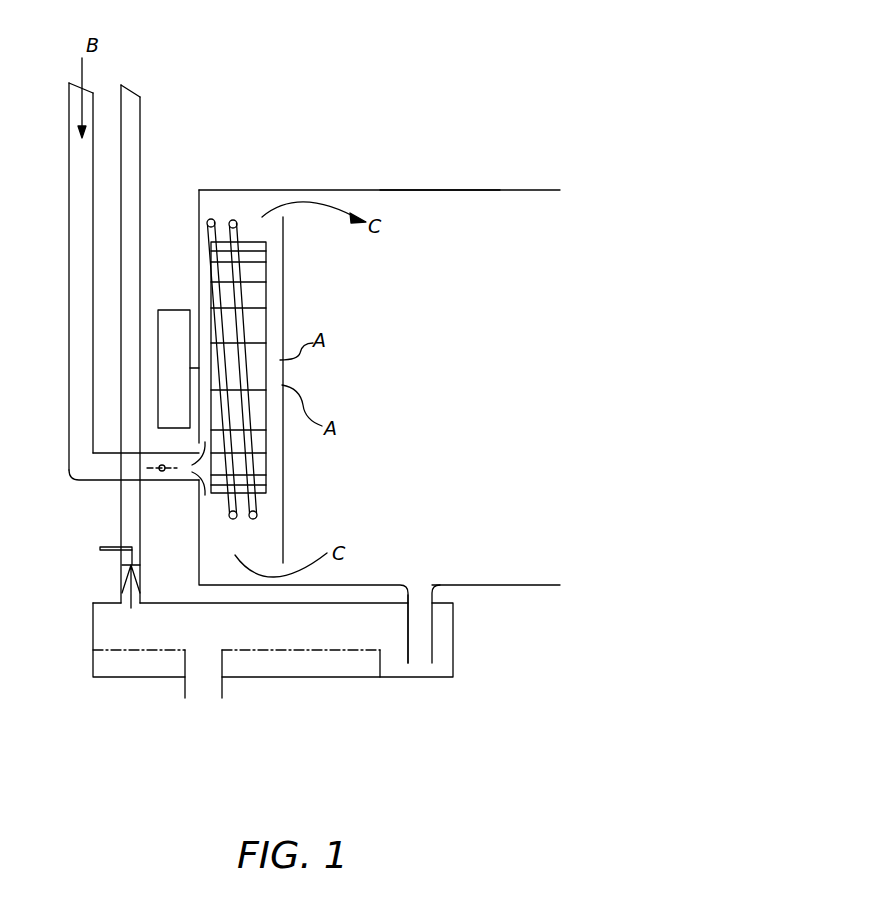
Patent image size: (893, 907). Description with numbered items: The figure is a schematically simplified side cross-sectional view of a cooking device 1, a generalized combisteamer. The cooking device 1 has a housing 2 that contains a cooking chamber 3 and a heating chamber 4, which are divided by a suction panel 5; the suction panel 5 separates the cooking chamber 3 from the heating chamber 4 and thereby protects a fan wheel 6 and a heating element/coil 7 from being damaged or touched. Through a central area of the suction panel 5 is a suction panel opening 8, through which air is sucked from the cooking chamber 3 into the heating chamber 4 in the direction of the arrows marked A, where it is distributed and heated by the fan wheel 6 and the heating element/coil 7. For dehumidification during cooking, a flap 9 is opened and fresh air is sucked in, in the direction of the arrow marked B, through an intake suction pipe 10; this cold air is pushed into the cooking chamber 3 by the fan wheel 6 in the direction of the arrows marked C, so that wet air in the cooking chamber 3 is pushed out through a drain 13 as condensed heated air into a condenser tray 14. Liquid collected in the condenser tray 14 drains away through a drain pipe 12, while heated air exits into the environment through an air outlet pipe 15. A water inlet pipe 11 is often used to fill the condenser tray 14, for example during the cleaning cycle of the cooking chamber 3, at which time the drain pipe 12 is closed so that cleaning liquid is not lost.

The cooking device 1 is at (347, 90).
The housing 2 is at (506, 178).
The cooking chamber 3 is at (418, 210).
The heating chamber 4 is at (217, 202).
The suction panel 5 is at (283, 240).
The fan wheel 6 is at (267, 297).
The heating element/coil 7 is at (255, 529).
The suction panel opening 8 is at (282, 368).
The flap 9 is at (158, 470).
The intake suction pipe 10 is at (75, 108).
The water inlet pipe 11 is at (100, 548).
The drain pipe 12 is at (207, 693).
The drain 13 is at (422, 588).
The condenser tray 14 is at (440, 682).
The air outlet pipe 15 is at (140, 125).